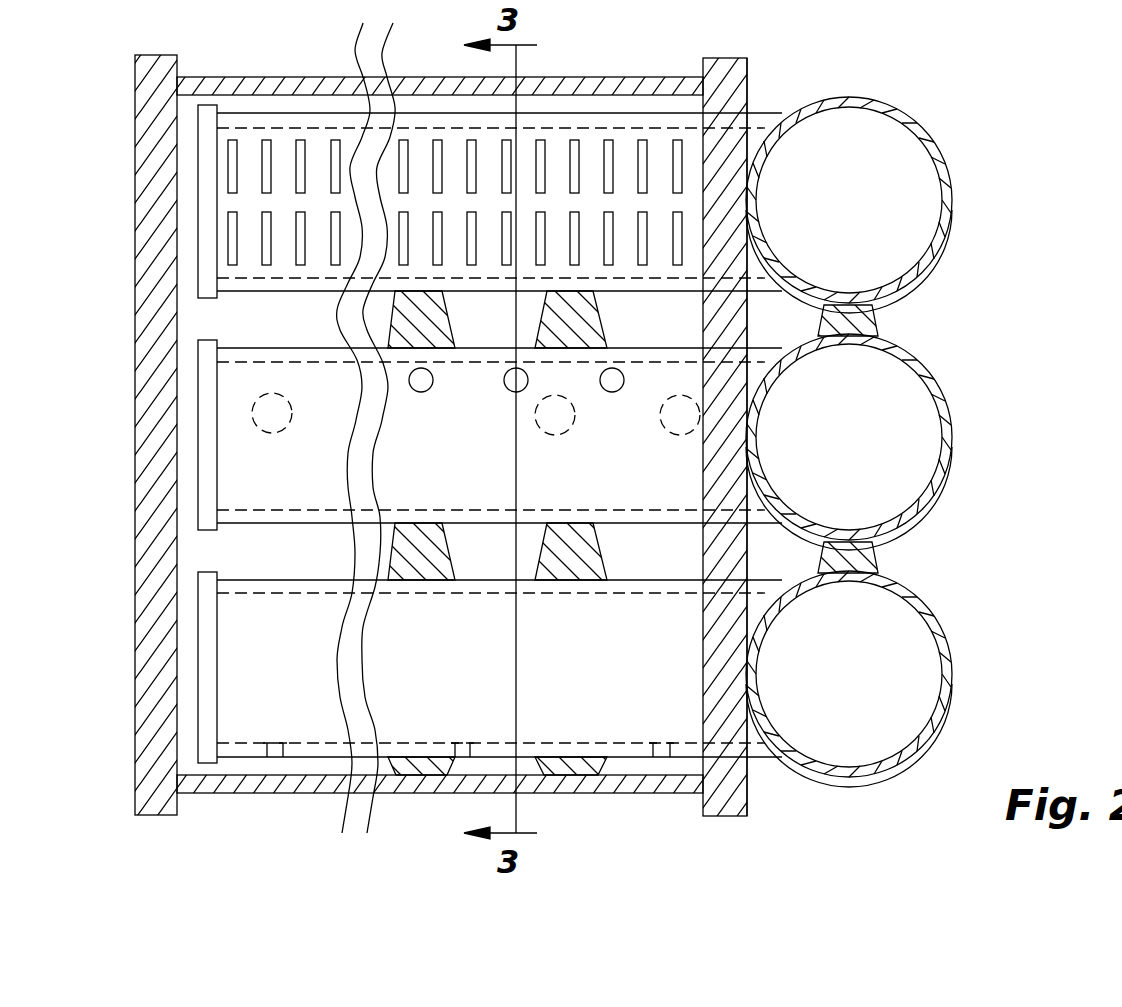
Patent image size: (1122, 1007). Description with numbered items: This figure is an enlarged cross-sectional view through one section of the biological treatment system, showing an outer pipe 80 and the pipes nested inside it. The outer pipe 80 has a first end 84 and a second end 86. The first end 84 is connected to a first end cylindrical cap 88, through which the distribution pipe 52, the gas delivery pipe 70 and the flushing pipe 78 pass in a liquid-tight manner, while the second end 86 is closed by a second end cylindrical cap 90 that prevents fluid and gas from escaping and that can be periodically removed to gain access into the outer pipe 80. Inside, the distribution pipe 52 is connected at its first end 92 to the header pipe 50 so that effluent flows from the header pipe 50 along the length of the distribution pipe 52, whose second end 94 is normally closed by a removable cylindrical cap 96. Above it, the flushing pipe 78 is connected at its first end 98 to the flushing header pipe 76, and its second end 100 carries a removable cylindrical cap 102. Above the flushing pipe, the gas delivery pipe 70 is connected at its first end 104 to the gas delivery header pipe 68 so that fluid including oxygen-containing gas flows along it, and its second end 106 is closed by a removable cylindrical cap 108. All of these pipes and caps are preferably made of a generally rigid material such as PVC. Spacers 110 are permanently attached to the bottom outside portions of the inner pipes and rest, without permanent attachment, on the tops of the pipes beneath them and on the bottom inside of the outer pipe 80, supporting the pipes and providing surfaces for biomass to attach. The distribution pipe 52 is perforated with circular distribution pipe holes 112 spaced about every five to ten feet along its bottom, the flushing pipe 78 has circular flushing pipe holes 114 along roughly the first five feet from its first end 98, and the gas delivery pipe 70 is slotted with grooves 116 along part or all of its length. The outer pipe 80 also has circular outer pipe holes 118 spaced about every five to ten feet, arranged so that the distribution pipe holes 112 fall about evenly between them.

The header pipe 50 is at (952, 705).
The distribution pipe 52 is at (258, 660).
The gas delivery header pipe 68 is at (943, 167).
The gas delivery pipe 70 is at (250, 180).
The flushing header pipe 76 is at (952, 470).
The flushing pipe 78 is at (258, 470).
The outer pipe 80 is at (255, 78).
The first end 84 is at (703, 72).
The second end 86 is at (178, 93).
The first end cylindrical cap 88 is at (748, 60).
The second end cylindrical cap 90 is at (147, 113).
The first end 92 is at (887, 582).
The second end 94 is at (213, 708).
The cylindrical cap 96 is at (213, 600).
The first end 98 is at (887, 333).
The second end 100 is at (208, 413).
The cylindrical cap 102 is at (210, 378).
The first end 104 is at (765, 130).
The second end 106 is at (220, 263).
The cylindrical cap 108 is at (208, 228).
The spacers 110 is at (403, 322).
The distribution pipe holes 112 is at (457, 760).
The flushing pipe holes 114 is at (612, 378).
The grooves 116 is at (467, 237).
The outer pipe holes 118 is at (258, 420).